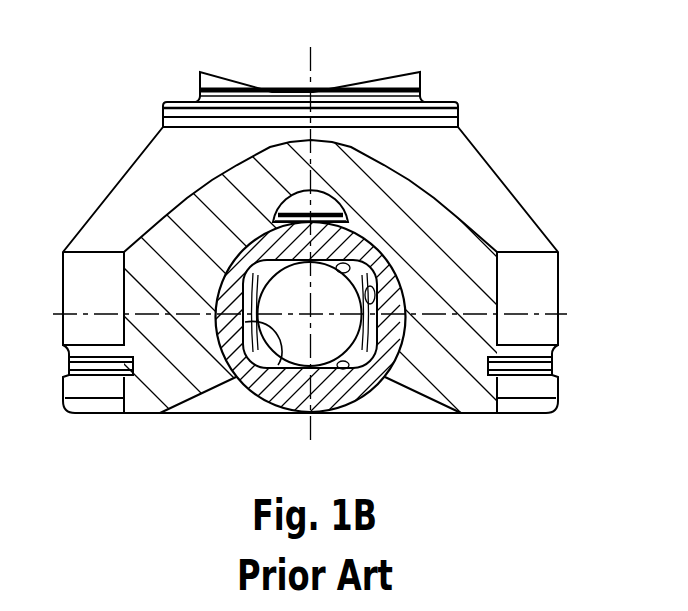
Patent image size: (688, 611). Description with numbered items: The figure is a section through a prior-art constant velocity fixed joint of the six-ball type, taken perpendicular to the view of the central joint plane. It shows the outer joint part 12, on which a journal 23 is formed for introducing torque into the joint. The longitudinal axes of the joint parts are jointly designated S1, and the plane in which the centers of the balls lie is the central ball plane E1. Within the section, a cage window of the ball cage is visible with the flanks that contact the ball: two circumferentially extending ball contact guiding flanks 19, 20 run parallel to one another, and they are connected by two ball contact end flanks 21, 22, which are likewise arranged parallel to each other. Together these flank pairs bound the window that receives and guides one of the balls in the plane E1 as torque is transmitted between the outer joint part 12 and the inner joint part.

The outer joint part 12 is at (512, 208).
The ball contact guiding flank 19 is at (365, 245).
The ball contact guiding flank 20 is at (337, 403).
The ball contact end flank 21 is at (388, 267).
The ball contact end flank 22 is at (267, 373).
The journal 23 is at (413, 80).
The longitudinal axes S1 is at (312, 59).
The central ball plane E1 is at (563, 313).